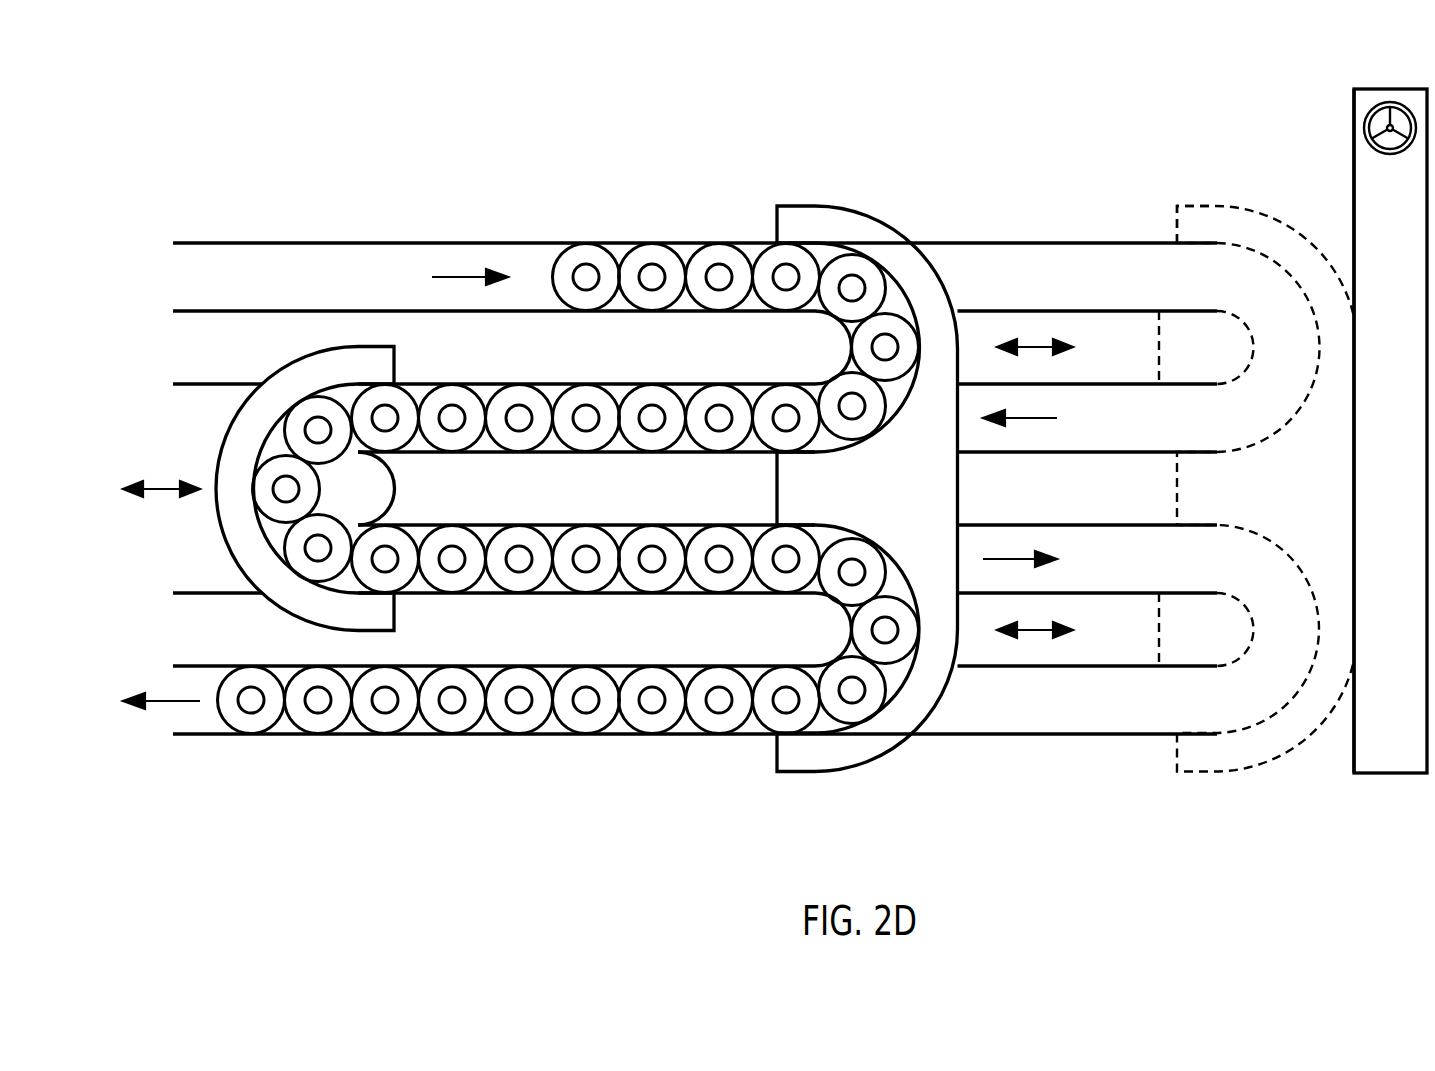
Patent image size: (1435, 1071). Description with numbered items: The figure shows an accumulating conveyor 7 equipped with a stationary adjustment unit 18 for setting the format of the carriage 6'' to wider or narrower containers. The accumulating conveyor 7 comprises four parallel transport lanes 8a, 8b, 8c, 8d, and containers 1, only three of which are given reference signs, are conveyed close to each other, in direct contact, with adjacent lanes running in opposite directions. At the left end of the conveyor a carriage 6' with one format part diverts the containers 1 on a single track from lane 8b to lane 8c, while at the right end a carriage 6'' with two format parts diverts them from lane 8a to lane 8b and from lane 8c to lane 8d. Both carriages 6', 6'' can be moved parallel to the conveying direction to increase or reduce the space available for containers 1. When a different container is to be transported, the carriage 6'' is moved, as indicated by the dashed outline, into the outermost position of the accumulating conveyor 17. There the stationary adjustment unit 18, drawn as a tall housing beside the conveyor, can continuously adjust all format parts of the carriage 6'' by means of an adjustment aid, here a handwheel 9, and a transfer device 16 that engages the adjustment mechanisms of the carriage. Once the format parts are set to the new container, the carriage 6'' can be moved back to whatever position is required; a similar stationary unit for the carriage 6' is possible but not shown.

The container 1 is at (596, 256).
The carriage 6' is at (305, 479).
The carriage 6'' is at (996, 461).
The accumulating conveyor 7 is at (662, 524).
The transport lane 8a is at (151, 277).
The transport lane 8b is at (151, 418).
The transport lane 8c is at (151, 559).
The transport lane 8d is at (151, 678).
The handwheel 9 is at (1387, 102).
The transfer device 16 is at (1348, 284).
The outermost position of the accumulating conveyor 17 is at (1254, 786).
The stationary adjustment unit 18 is at (1367, 786).